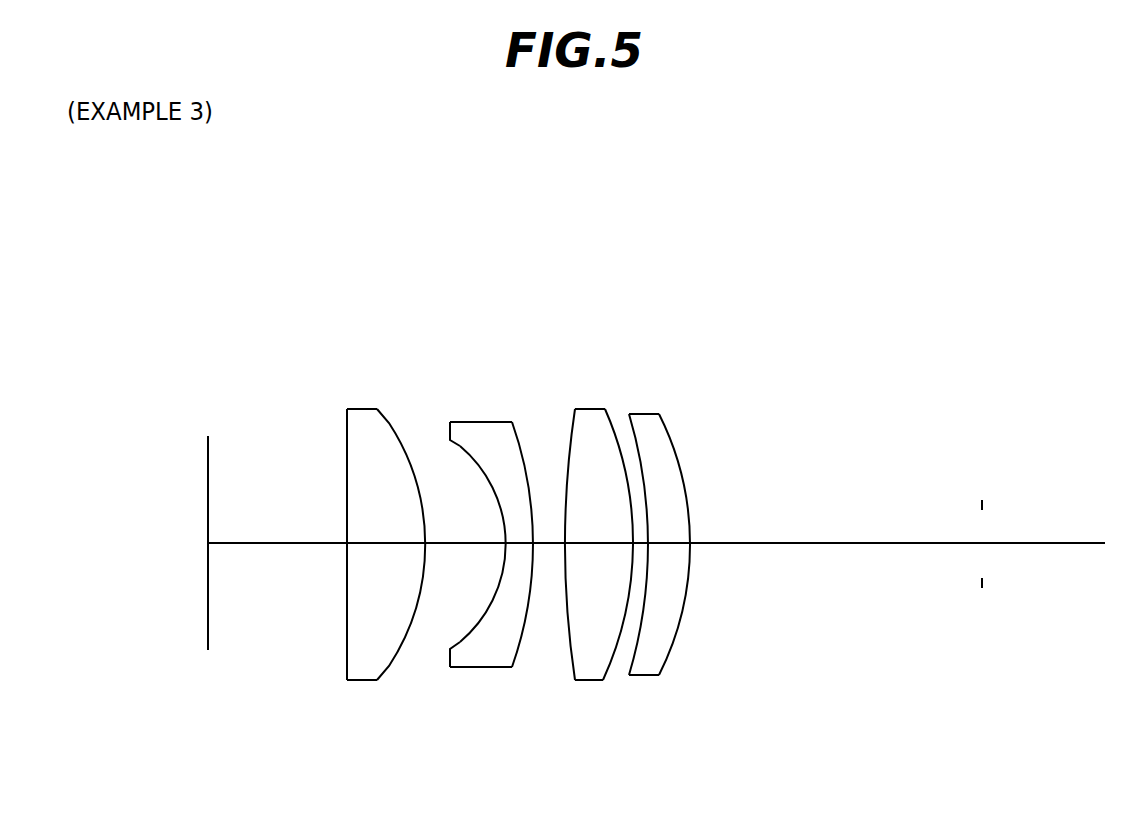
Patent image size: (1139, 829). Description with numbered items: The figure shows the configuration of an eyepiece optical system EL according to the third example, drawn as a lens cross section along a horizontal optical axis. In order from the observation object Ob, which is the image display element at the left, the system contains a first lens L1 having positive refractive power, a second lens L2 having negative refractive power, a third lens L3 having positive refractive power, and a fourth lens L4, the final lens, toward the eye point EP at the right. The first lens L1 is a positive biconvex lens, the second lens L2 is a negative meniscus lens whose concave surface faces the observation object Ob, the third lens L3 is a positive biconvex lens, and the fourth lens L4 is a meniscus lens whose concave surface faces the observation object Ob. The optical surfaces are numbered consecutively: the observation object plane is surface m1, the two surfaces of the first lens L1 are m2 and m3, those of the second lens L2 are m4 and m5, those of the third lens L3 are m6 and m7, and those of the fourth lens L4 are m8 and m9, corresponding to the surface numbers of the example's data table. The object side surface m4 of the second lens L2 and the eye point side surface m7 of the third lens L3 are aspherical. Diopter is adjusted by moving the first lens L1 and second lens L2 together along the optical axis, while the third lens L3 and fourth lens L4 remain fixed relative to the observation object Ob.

The eyepiece optical system EL is at (767, 216).
The optical surface m1 is at (208, 433).
The observation object Ob is at (205, 657).
The first lens L1 is at (371, 571).
The optical surface m2 is at (347, 430).
The optical surface m3 is at (393, 427).
The second lens L2 is at (484, 571).
The optical surface m4 is at (453, 448).
The optical surface m5 is at (520, 437).
The third lens L3 is at (590, 571).
The optical surface m6 is at (570, 440).
The optical surface m7 is at (620, 438).
The fourth lens L4 is at (666, 571).
The optical surface m8 is at (633, 440).
The optical surface m9 is at (673, 440).
The eye point EP is at (982, 595).